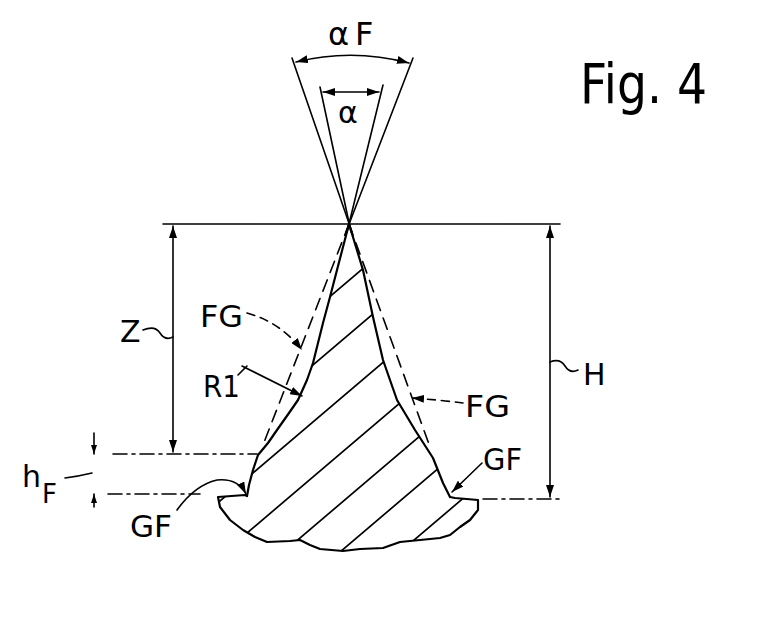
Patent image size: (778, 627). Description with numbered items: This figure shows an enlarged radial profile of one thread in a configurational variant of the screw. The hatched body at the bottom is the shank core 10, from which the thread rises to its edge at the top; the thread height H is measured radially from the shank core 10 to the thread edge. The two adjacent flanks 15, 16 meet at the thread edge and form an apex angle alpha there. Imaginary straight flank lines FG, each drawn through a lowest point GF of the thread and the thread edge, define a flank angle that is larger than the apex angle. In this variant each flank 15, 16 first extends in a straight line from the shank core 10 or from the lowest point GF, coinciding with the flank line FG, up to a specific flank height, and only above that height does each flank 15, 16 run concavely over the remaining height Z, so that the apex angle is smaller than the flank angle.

The shank core 10 is at (448, 525).
The flank 15 is at (322, 334).
The flank 16 is at (386, 366).